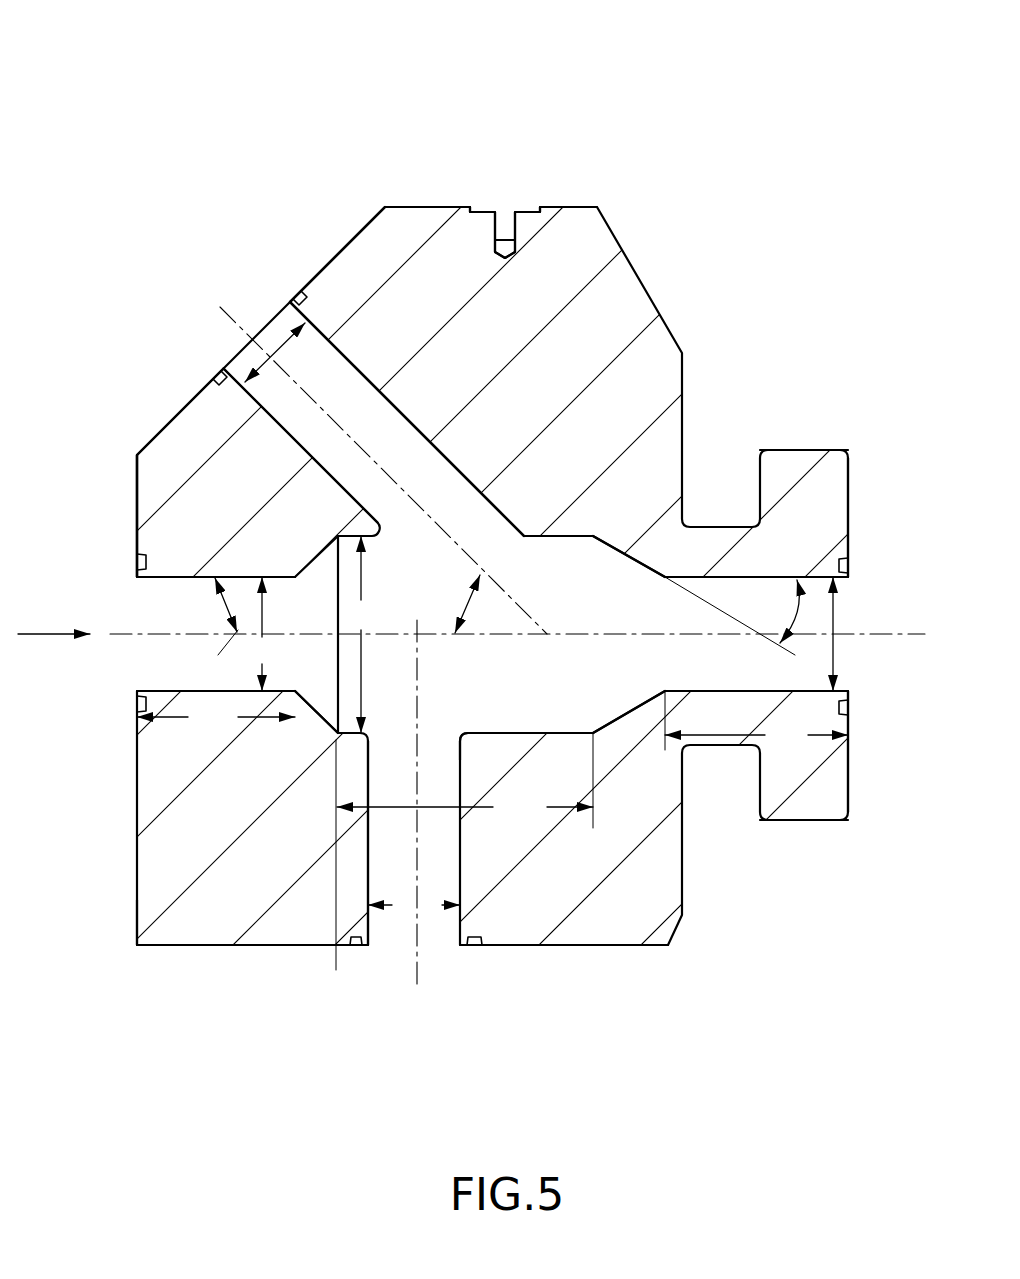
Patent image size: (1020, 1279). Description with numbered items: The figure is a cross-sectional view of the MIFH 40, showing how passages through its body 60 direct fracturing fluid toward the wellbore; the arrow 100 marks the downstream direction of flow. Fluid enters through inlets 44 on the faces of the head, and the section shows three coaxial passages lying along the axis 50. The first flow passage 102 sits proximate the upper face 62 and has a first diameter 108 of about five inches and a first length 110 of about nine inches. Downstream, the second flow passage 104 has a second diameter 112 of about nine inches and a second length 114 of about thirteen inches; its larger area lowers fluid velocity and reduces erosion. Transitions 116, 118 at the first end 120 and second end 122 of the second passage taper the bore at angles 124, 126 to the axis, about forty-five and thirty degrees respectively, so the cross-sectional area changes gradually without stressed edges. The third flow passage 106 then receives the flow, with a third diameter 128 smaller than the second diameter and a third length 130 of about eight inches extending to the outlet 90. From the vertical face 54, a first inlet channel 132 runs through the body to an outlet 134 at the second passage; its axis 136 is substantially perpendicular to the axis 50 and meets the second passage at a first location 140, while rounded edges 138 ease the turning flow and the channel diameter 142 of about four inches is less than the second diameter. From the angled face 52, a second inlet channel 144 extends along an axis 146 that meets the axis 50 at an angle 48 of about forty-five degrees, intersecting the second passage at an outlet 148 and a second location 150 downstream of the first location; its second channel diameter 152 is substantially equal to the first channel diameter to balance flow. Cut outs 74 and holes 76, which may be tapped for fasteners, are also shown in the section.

The MIFH 40 is at (213, 100).
The inlet 44 is at (283, 270).
The angle 48 is at (463, 597).
The axis 50 is at (878, 637).
The angled face 52 is at (380, 170).
The vertical face 54 is at (508, 966).
The body 60 is at (148, 928).
The upper face 62 is at (134, 502).
The cut out 74 is at (520, 160).
The hole 76 is at (514, 210).
The outlet 90 is at (885, 597).
The arrow 100 is at (54, 619).
The first flow passage 102 is at (165, 690).
The second flow passage 104 is at (557, 733).
The third flow passage 106 is at (772, 692).
The first diameter 108 is at (262, 634).
The first length 110 is at (216, 717).
The second diameter 112 is at (360, 634).
The second length 114 is at (464, 851).
The transition 116 is at (310, 723).
The transition 118 is at (641, 724).
The first end 120 is at (273, 522).
The second end 122 is at (609, 537).
The angle 124 is at (220, 617).
The angle 126 is at (793, 612).
The third diameter 128 is at (834, 676).
The third length 130 is at (756, 720).
The first inlet channel 132 is at (352, 902).
The outlet 134 is at (352, 752).
The axis 136 is at (415, 973).
The rounded edges 138 is at (470, 728).
The first location 140 is at (405, 643).
The channel diameter 142 is at (414, 905).
The second inlet channel 144 is at (366, 315).
The axis 146 is at (347, 403).
The outlet 148 is at (522, 512).
The second location 150 is at (505, 618).
The second channel diameter 152 is at (278, 350).